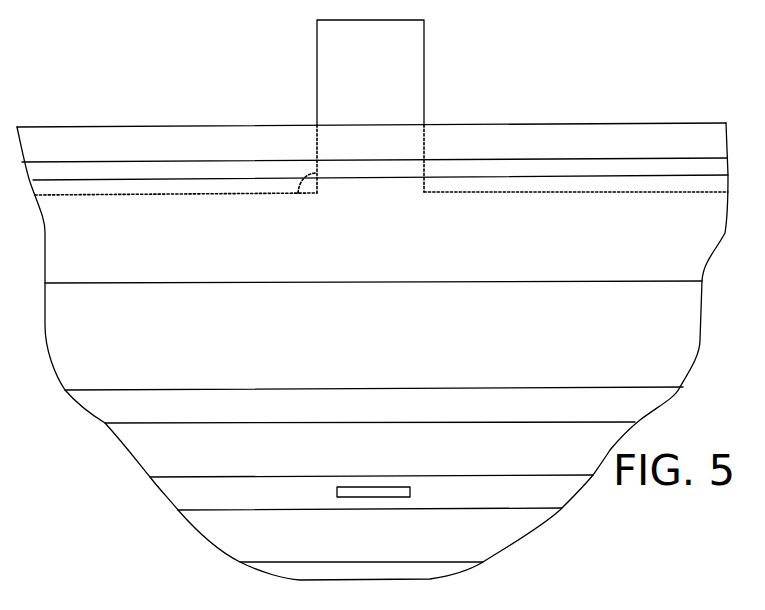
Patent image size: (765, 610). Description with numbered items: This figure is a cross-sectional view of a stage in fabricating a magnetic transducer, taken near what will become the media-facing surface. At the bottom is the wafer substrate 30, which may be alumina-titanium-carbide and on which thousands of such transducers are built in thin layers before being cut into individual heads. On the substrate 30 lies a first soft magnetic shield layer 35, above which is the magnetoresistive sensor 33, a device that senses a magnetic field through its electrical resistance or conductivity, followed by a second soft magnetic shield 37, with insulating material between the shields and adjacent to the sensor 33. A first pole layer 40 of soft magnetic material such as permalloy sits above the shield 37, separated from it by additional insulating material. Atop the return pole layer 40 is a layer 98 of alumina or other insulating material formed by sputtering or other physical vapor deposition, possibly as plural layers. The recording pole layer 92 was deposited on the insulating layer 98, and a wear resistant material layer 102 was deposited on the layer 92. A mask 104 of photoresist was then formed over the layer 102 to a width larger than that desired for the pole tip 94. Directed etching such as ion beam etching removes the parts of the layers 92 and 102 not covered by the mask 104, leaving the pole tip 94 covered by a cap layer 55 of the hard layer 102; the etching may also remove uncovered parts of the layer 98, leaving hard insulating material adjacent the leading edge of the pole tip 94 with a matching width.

The wafer substrate 30 is at (275, 571).
The magnetoresistive sensor 33 is at (375, 497).
The first shield layer 35 is at (480, 544).
The second soft magnetic shield 37 is at (280, 459).
The first pole layer 40 is at (378, 348).
The insulating layer 98 is at (385, 259).
The wear resistant material layer 102 is at (197, 125).
The mask 104 is at (391, 88).
The cap layer 55 is at (424, 140).
The recording pole layer 92 is at (585, 192).
The pole tip 94 is at (296, 192).